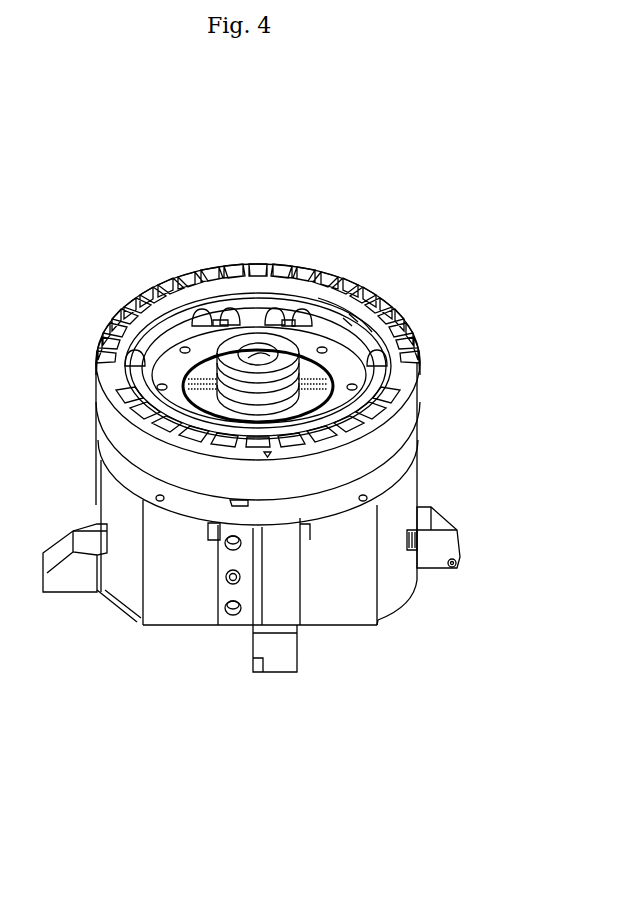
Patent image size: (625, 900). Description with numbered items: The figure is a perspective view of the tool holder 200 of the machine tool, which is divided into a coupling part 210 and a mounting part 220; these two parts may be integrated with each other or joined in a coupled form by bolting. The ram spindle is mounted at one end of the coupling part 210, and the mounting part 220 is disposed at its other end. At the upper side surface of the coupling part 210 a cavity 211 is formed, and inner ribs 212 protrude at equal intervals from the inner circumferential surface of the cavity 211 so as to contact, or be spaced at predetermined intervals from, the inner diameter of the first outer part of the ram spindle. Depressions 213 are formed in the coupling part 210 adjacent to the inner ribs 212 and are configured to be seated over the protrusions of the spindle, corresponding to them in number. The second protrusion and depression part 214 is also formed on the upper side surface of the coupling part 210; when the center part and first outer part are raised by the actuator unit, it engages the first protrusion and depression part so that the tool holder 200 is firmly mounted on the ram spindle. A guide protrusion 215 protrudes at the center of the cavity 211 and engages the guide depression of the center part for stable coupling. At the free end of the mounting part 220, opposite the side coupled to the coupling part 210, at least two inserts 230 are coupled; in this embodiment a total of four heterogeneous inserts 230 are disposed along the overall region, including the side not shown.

The tool holder 200 is at (101, 189).
The coupling part 210 is at (405, 416).
The cavity 211 is at (368, 296).
The inner ribs 212 is at (320, 302).
The depressions 213 is at (275, 287).
The second protrusion and depression part 214 is at (348, 322).
The guide protrusion 215 is at (215, 320).
The mounting part 220 is at (406, 500).
The inserts 230 is at (80, 578).